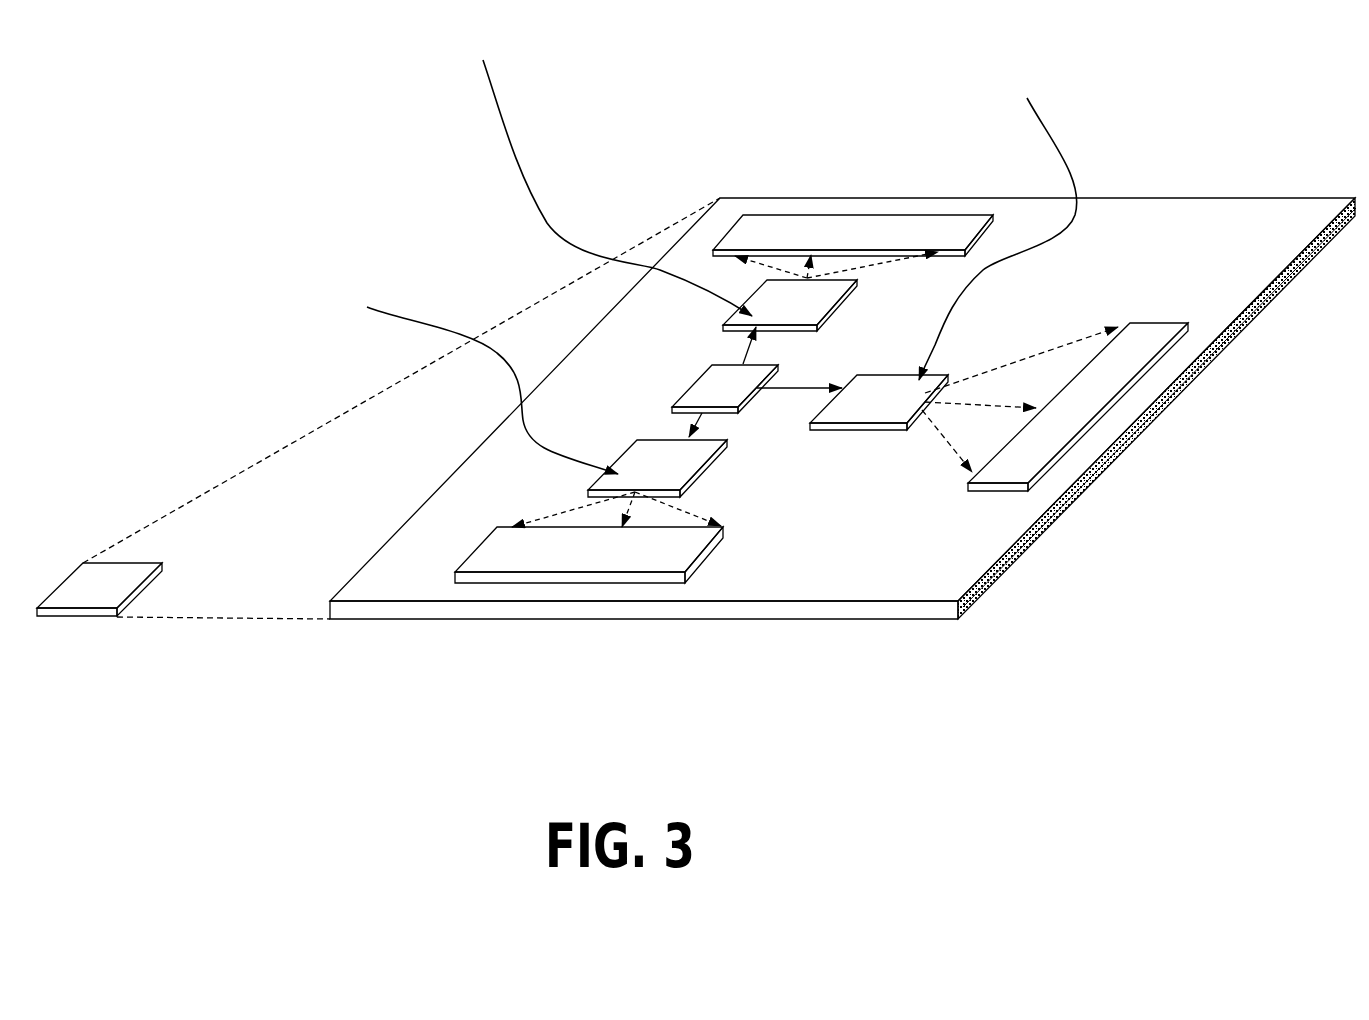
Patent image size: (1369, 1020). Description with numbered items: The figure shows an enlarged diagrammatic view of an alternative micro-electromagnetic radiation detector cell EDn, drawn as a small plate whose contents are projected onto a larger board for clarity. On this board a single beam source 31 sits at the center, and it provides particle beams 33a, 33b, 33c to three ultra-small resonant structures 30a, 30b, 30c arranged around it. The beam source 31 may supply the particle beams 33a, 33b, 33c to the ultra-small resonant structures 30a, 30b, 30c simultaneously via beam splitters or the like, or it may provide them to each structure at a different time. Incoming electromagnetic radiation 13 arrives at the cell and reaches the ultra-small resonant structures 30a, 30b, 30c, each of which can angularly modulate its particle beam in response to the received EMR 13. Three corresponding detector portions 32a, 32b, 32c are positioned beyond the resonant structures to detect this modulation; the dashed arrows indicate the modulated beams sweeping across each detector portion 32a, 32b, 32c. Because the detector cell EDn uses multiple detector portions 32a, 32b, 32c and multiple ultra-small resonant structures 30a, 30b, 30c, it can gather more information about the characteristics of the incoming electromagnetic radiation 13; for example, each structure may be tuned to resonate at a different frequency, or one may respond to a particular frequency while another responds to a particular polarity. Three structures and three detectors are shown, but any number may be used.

The electromagnetic radiation 13 is at (489, 129).
The ultra-small resonant structure 30a is at (908, 409).
The ultra-small resonant structure 30b is at (810, 314).
The ultra-small resonant structure 30c is at (680, 481).
The beam source 31 is at (738, 397).
The detector portion 32a is at (997, 472).
The detector portion 32b is at (850, 247).
The detector portion 32c is at (612, 561).
The particle beam 33a is at (726, 348).
The particle beam 33b is at (799, 369).
The particle beam 33c is at (668, 425).
The micro-electromagnetic radiation detector cell EDn is at (99, 589).